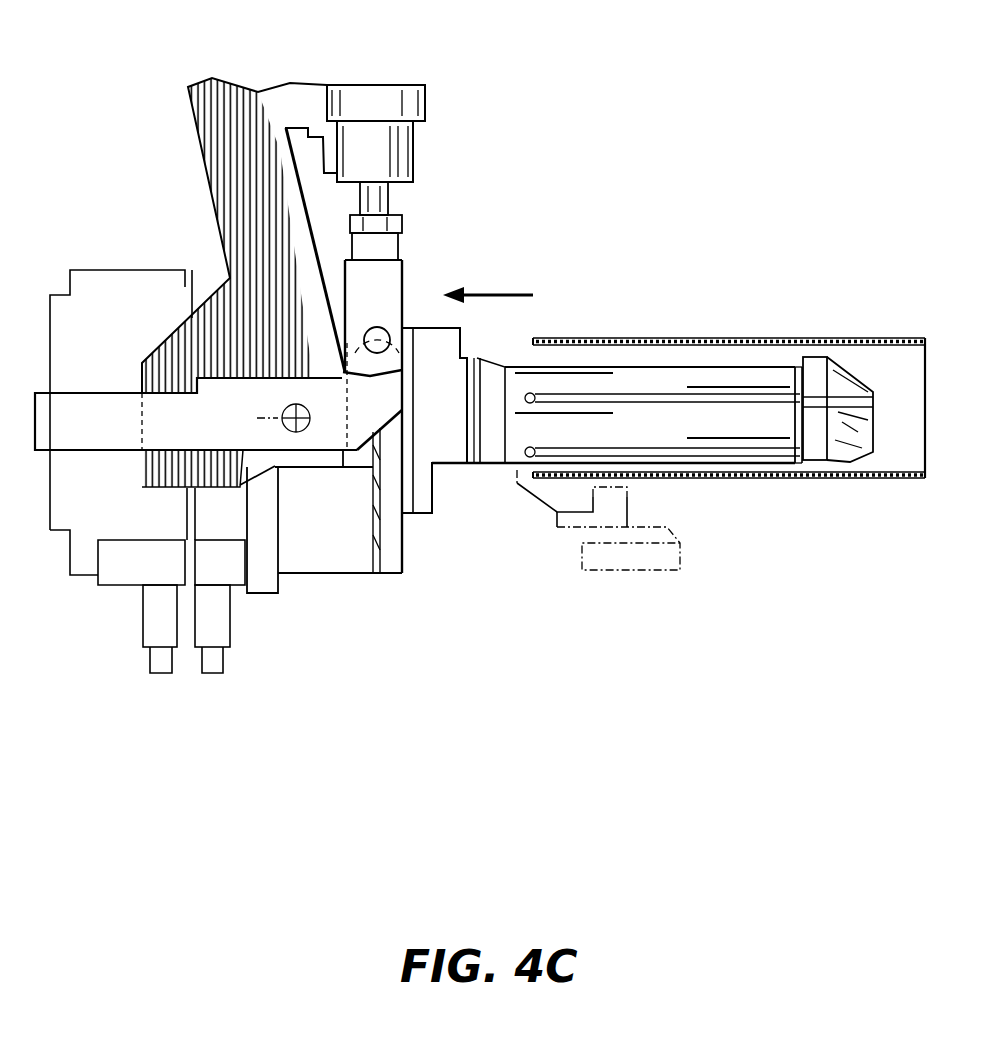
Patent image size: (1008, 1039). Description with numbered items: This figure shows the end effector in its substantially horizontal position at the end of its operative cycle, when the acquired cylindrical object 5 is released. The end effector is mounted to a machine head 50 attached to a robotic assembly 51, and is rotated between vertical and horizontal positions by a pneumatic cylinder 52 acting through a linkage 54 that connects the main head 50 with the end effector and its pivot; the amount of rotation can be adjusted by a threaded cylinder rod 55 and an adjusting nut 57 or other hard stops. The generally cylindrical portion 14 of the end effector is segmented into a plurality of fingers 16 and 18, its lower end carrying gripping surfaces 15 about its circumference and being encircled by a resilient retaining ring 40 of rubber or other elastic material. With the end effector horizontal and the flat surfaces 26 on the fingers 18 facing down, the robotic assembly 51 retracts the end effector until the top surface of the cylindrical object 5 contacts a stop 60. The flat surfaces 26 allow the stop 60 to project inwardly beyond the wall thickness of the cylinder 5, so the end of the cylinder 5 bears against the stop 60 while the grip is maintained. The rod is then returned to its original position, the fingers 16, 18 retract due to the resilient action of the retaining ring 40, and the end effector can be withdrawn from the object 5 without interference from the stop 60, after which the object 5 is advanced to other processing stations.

The cylindrical object 5 is at (628, 338).
The cylindrical portion 14 is at (700, 365).
The gripping surfaces 15 is at (817, 357).
The fingers 16 is at (860, 462).
The fingers 18 is at (733, 457).
The flat surfaces 26 is at (493, 466).
The resilient retaining ring 40 is at (797, 465).
The machine head 50 is at (331, 555).
The robotic assembly 51 is at (276, 102).
The pneumatic cylinder 52 is at (392, 101).
The linkage 54 is at (107, 415).
The threaded cylinder rod 55 is at (380, 206).
The adjusting nut 57 is at (400, 245).
The stop 60 is at (571, 590).